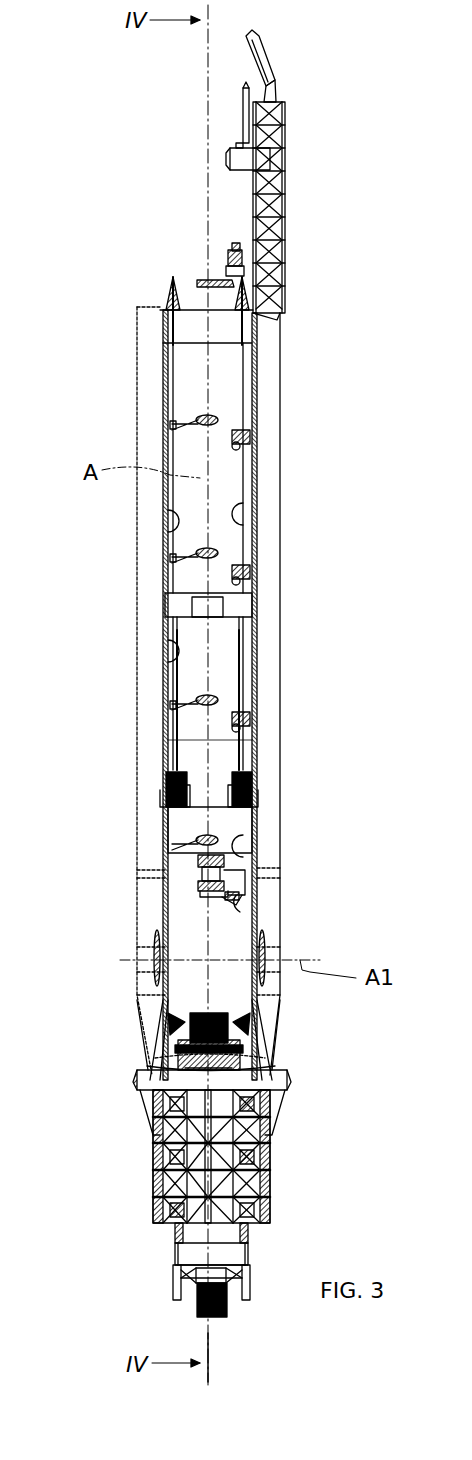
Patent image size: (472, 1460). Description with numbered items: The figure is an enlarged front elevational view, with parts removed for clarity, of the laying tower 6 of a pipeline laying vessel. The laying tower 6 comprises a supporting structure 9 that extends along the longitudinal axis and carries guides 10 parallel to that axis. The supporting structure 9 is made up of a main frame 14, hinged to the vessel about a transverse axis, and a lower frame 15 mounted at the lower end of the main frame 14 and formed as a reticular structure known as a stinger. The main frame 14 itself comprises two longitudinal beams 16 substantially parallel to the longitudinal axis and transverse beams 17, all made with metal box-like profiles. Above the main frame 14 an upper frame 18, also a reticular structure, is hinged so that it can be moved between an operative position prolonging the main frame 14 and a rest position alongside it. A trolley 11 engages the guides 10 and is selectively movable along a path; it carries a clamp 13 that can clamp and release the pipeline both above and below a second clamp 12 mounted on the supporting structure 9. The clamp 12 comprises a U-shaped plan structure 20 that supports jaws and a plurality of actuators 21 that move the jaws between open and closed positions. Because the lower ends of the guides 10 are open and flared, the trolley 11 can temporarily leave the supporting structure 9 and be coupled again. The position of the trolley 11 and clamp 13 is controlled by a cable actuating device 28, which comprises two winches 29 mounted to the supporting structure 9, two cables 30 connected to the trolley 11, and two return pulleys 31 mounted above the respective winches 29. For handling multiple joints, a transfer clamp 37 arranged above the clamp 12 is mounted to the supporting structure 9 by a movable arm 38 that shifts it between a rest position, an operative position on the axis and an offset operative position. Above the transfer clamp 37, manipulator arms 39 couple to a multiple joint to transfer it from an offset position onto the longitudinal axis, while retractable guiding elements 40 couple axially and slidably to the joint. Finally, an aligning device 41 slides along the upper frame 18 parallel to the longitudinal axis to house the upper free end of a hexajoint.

The laying tower 6 is at (386, 252).
The supporting structure 9 is at (100, 568).
The guides 10 is at (165, 525).
The trolley 11 is at (254, 1280).
The clamp 12 is at (160, 1060).
The clamp 13 is at (234, 1320).
The main frame 14 is at (284, 686).
The lower frame 15 is at (282, 1172).
The longitudinal beams 16 is at (148, 695).
The transverse beams 17 is at (180, 355).
The upper frame 18 is at (292, 208).
The U-shaped plan structure 20 is at (220, 1013).
The actuators 21 is at (180, 1015).
The cable actuating device 28 is at (166, 745).
The winches 29 is at (153, 800).
The cables 30 is at (170, 662).
The return pulleys 31 is at (170, 285).
The transfer clamp 37 is at (206, 910).
The movable arm 38 is at (256, 925).
The manipulator arms 39 is at (256, 440).
The guiding elements 40 is at (226, 400).
The aligning device 41 is at (216, 268).